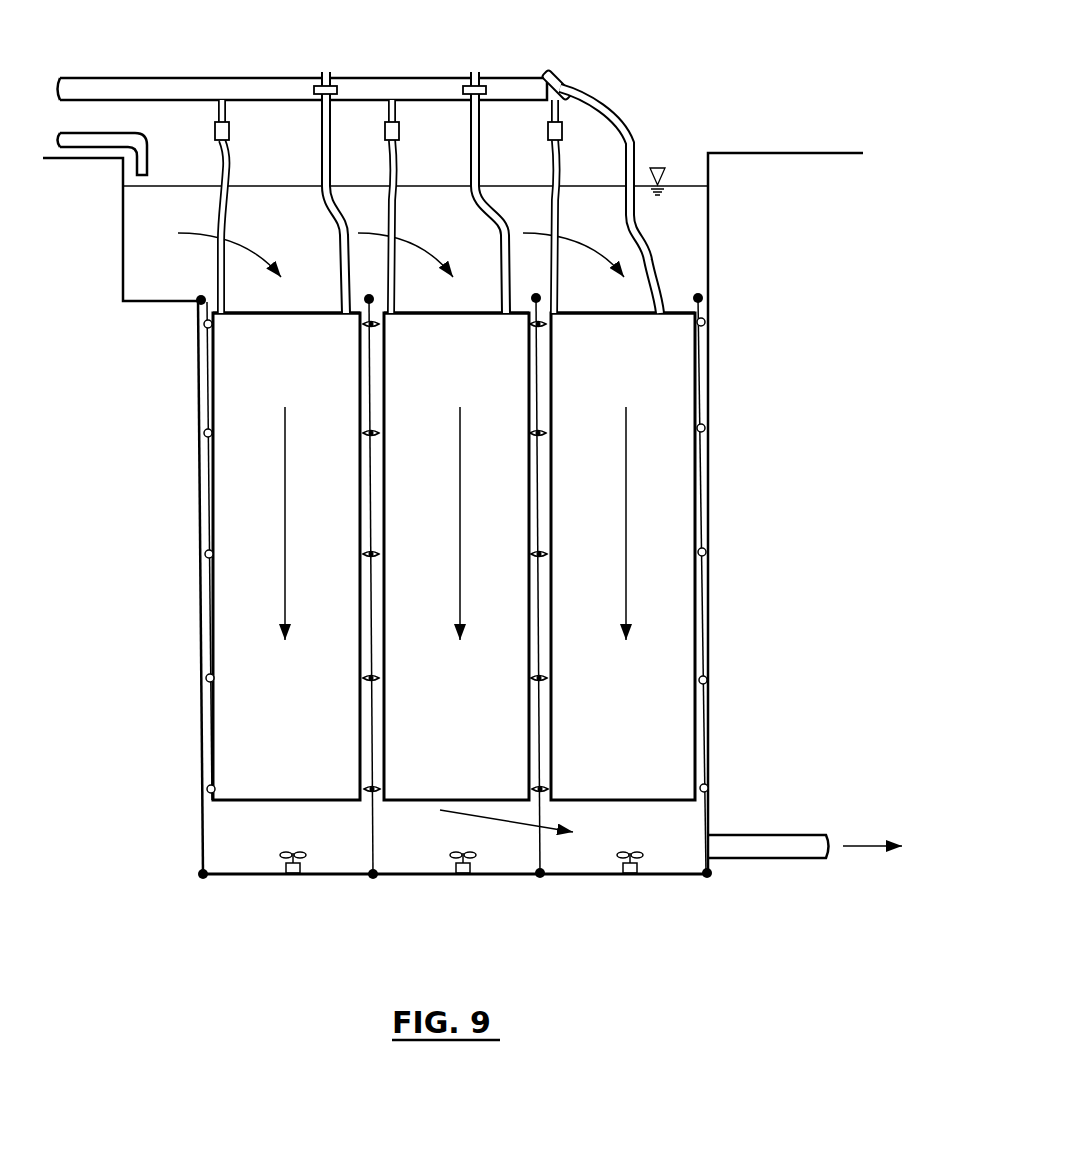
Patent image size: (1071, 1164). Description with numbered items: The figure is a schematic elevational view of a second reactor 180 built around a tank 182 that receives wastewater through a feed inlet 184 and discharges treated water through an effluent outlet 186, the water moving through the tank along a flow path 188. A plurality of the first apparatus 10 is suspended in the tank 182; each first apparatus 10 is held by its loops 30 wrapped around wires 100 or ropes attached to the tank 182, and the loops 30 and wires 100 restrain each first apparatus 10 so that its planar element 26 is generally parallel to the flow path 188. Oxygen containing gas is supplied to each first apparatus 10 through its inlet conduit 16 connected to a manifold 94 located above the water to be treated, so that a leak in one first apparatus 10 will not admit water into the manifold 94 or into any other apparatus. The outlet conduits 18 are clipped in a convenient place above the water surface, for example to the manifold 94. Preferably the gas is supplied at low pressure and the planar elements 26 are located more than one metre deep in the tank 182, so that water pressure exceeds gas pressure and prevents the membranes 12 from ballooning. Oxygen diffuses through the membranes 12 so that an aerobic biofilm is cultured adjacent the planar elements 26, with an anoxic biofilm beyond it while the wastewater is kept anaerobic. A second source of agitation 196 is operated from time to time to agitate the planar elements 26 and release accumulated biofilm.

The manifold 94 is at (389, 78).
The inlet conduit 16 is at (229, 160).
The outlet conduit 18 is at (332, 147).
The feed inlet 184 is at (80, 148).
The wire 100 is at (203, 358).
The loop 30 is at (205, 430).
The flow path 188 is at (285, 528).
The planar element 26 is at (299, 374).
The membrane 12 is at (344, 522).
The first apparatus 10 is at (303, 766).
The second reactor 180 is at (133, 752).
The tank 182 is at (200, 808).
The second source of agitation 196 is at (304, 858).
The effluent outlet 186 is at (770, 835).